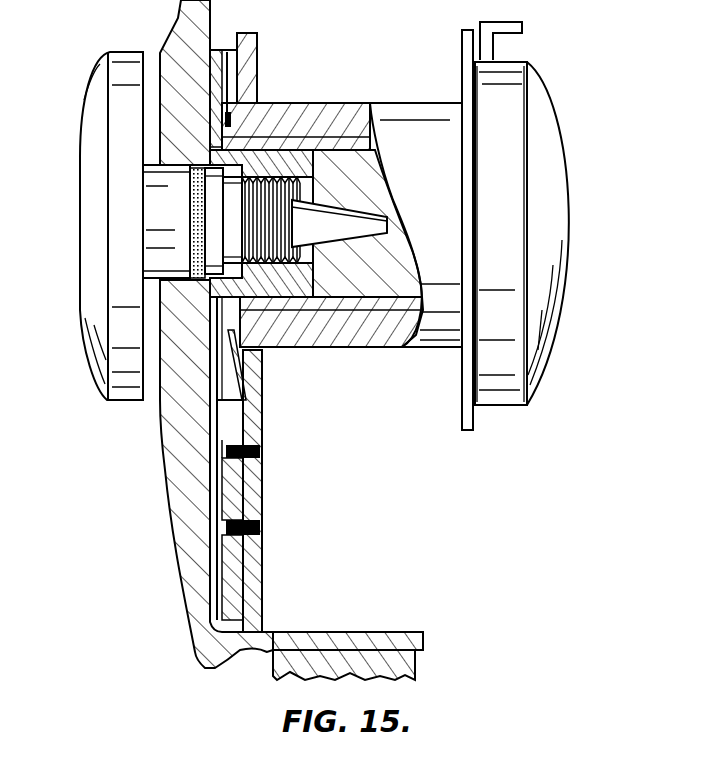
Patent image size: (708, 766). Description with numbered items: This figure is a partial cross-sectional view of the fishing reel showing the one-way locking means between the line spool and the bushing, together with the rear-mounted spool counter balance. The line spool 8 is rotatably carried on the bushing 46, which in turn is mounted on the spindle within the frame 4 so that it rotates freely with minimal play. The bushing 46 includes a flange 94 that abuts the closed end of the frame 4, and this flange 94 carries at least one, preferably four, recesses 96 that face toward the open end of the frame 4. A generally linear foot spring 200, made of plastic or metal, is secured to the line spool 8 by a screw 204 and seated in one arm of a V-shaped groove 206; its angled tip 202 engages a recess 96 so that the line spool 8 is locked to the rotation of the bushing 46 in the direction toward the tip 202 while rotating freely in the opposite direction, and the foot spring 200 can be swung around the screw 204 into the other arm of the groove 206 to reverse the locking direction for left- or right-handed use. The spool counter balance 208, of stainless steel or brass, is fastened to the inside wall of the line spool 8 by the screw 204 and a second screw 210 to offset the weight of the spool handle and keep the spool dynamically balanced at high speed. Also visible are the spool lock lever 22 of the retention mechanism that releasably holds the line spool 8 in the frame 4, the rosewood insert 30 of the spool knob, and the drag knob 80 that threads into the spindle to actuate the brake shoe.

The frame 4 is at (180, 22).
The line spool 8 is at (250, 72).
The spool lock lever 22 is at (518, 37).
The insert 30 is at (550, 163).
The bushing 46 is at (294, 148).
The drag knob 80 is at (92, 241).
The flange 94 is at (254, 34).
The recesses 96 is at (235, 104).
The foot spring 200 is at (248, 420).
The angled tip 202 is at (218, 362).
The screw 204 is at (261, 453).
The V-shaped groove 206 is at (264, 373).
The spool counter balance 208 is at (238, 503).
The screw 210 is at (258, 528).